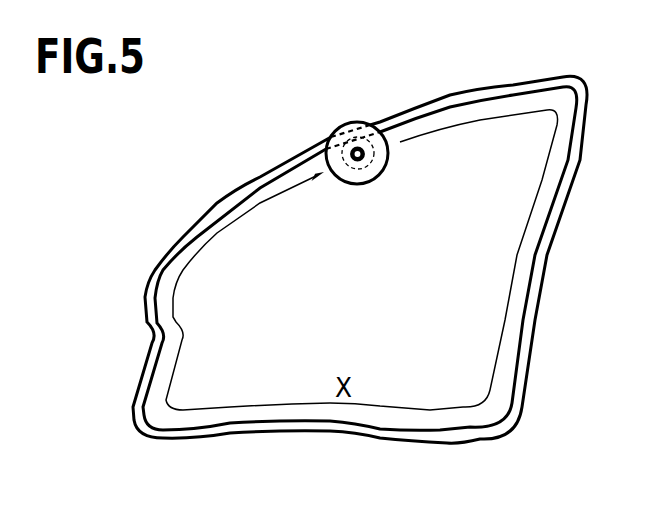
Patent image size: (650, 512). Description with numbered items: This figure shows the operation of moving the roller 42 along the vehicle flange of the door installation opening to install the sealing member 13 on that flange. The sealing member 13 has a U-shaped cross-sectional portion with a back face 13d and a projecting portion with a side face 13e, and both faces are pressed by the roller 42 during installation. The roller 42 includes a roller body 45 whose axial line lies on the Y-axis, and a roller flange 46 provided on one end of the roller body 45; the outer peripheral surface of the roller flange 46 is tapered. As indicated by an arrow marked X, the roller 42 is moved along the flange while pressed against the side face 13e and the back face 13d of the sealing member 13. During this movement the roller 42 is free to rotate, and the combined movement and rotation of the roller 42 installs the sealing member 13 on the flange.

The sealing member 13 is at (321, 234).
The back face 13d is at (407, 116).
The side face 13e is at (232, 200).
The roller 42 is at (327, 140).
The roller body 45 is at (370, 167).
The roller flange 46 is at (347, 183).